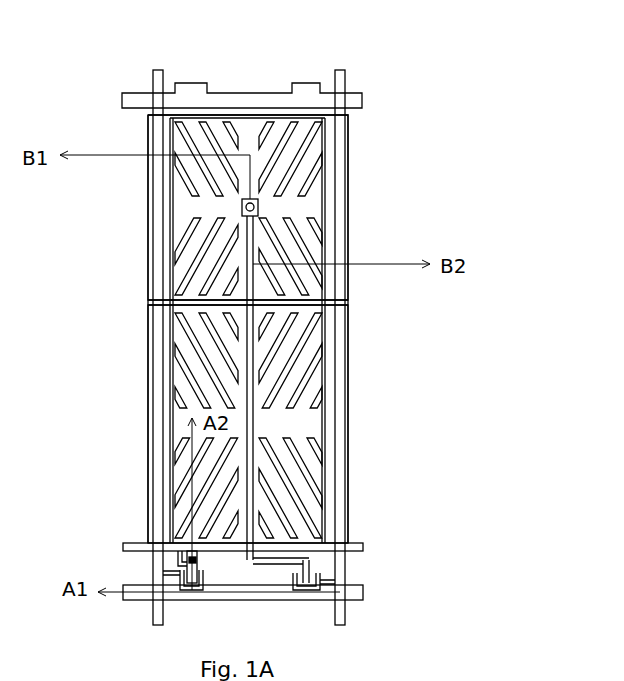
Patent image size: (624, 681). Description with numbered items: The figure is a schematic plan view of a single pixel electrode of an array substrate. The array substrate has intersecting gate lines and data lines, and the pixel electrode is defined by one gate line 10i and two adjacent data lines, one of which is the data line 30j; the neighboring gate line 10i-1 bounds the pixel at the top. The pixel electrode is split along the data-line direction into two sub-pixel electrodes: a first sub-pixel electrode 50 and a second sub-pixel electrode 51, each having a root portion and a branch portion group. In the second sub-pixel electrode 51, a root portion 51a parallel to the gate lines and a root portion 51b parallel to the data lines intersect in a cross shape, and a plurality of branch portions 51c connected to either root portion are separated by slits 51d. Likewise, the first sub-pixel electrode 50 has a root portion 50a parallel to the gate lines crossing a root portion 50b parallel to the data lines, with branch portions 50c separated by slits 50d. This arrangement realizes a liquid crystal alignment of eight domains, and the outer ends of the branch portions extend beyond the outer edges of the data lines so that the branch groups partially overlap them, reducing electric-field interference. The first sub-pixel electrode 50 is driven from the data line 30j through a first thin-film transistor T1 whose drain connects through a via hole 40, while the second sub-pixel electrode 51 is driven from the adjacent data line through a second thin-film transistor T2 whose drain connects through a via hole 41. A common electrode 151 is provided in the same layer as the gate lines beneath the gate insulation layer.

The data line 30j is at (161, 70).
The gate line 10i-1 is at (122, 100).
The gate line 10i is at (135, 592).
The common electrode 151 is at (133, 548).
The second sub-pixel electrode 51 is at (285, 170).
The root portion 51a is at (300, 206).
The root portion 51b is at (247, 143).
The branch portions 51c is at (303, 158).
The slits 51d is at (318, 178).
The first sub-pixel electrode 50 is at (284, 424).
The root portion 50a is at (305, 422).
The root portion 50b is at (256, 345).
The branch portions 50c is at (303, 357).
The slits 50d is at (310, 382).
The via hole 41 is at (242, 206).
The via hole 40 is at (200, 563).
The first thin-film transistor T1 is at (203, 571).
The second thin-film transistor T2 is at (307, 563).